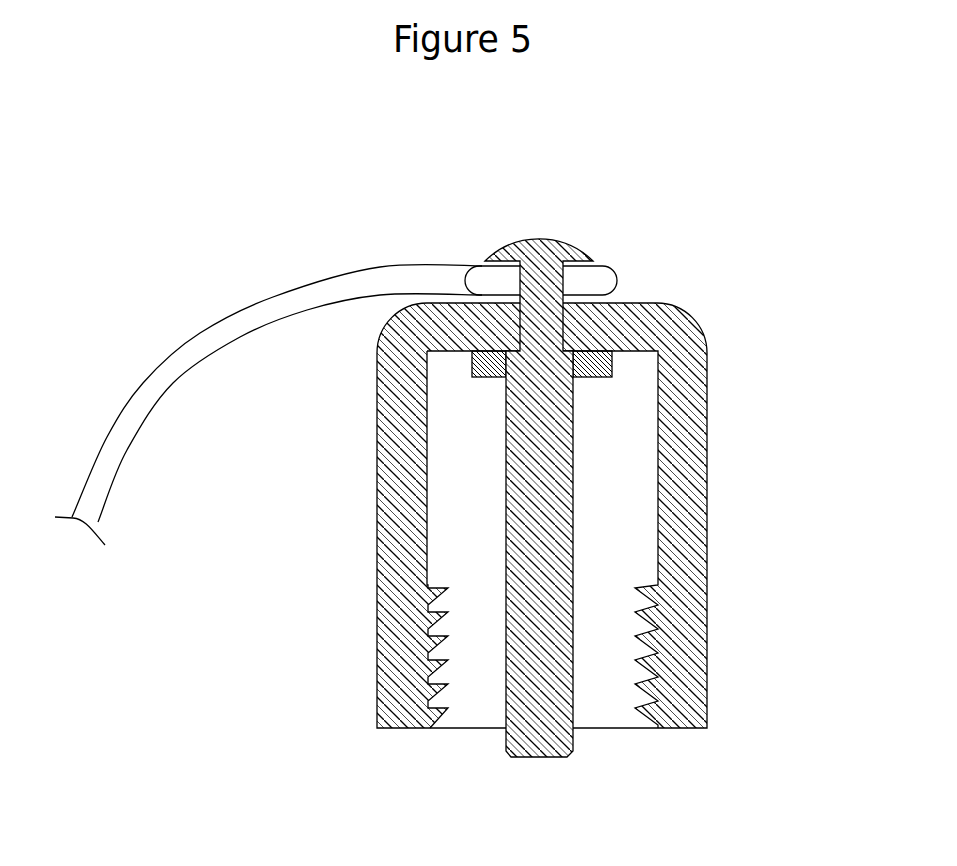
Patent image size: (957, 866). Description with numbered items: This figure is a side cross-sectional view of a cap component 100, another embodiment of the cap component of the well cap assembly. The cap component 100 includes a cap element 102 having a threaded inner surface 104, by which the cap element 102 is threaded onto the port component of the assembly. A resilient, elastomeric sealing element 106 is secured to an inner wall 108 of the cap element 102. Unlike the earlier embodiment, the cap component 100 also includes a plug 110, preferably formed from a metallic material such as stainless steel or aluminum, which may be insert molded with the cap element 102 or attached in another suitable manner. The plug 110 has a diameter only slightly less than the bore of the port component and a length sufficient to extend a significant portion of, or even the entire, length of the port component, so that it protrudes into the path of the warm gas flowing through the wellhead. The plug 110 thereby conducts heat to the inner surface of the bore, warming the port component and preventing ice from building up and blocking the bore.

The cap component 100 is at (443, 517).
The cap element 102 is at (487, 515).
The threaded inner surface 104 is at (447, 654).
The sealing element 106 is at (484, 378).
The inner wall 108 is at (600, 363).
The plug 110 is at (538, 673).